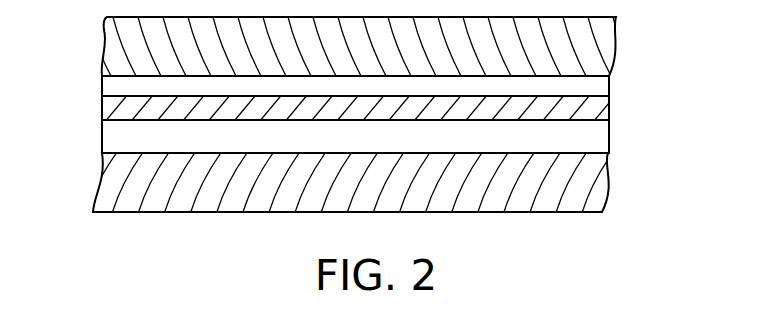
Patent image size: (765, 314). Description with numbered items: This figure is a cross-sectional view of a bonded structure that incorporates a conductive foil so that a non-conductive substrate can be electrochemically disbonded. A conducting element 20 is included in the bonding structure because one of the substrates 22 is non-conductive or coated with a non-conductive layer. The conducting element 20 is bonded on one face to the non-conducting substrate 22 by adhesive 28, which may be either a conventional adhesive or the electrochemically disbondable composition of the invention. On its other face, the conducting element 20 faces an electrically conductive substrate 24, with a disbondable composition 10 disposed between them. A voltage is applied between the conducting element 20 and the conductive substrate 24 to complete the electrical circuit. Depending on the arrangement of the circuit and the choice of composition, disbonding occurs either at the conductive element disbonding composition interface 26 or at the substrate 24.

The conducting element 20 is at (598, 108).
The non-conducting substrate 22 is at (105, 40).
The adhesive 28 is at (104, 86).
The conductive element disbonding composition interface 26 is at (216, 108).
The disbondable composition 10 is at (105, 141).
The electrically conductive substrate 24 is at (108, 183).